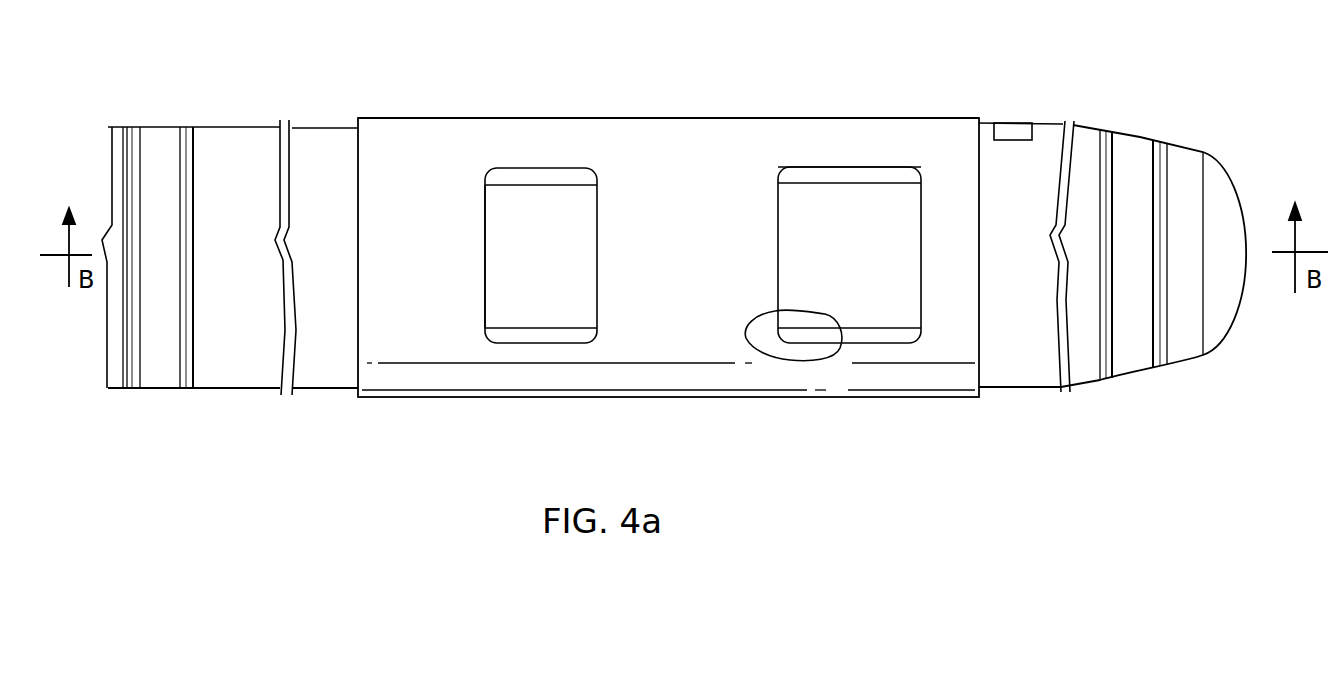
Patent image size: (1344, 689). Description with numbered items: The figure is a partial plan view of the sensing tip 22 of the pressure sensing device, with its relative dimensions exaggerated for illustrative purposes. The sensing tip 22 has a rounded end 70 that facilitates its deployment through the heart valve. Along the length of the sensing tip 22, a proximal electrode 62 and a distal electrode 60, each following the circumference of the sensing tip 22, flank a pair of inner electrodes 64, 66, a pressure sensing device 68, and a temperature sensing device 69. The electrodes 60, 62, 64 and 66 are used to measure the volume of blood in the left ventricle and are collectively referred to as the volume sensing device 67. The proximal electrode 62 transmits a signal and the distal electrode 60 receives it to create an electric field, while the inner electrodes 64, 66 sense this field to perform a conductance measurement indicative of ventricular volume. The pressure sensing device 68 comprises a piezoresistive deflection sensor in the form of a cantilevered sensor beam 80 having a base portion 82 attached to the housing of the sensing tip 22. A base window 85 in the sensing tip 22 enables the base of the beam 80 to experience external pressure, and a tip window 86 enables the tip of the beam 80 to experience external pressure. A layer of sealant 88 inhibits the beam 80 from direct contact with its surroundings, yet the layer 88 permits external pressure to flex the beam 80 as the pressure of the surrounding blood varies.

The sensing tip 22 is at (584, 90).
The distal electrode 60 is at (1158, 144).
The proximal electrode 62 is at (132, 136).
The inner electrode 64 is at (1103, 136).
The inner electrode 66 is at (186, 134).
The volume sensing device 67 is at (208, 93).
The pressure sensing device 68 is at (935, 120).
The temperature sensing device 69 is at (1013, 130).
The rounded end 70 is at (1213, 330).
The cantilevered sensor beam 80 is at (902, 212).
The base portion 82 is at (541, 317).
The base window 85 is at (577, 172).
The tip window 86 is at (795, 175).
The layer of sealant 88 is at (820, 352).